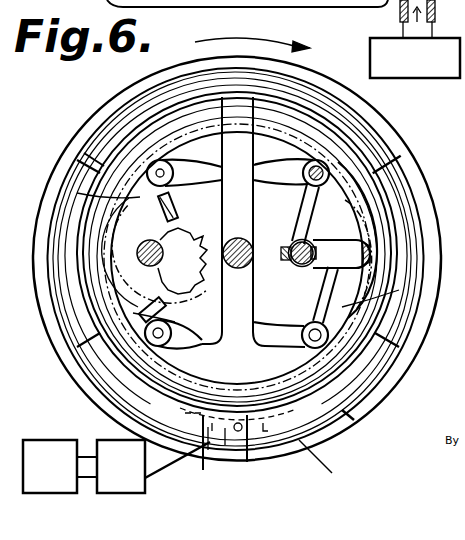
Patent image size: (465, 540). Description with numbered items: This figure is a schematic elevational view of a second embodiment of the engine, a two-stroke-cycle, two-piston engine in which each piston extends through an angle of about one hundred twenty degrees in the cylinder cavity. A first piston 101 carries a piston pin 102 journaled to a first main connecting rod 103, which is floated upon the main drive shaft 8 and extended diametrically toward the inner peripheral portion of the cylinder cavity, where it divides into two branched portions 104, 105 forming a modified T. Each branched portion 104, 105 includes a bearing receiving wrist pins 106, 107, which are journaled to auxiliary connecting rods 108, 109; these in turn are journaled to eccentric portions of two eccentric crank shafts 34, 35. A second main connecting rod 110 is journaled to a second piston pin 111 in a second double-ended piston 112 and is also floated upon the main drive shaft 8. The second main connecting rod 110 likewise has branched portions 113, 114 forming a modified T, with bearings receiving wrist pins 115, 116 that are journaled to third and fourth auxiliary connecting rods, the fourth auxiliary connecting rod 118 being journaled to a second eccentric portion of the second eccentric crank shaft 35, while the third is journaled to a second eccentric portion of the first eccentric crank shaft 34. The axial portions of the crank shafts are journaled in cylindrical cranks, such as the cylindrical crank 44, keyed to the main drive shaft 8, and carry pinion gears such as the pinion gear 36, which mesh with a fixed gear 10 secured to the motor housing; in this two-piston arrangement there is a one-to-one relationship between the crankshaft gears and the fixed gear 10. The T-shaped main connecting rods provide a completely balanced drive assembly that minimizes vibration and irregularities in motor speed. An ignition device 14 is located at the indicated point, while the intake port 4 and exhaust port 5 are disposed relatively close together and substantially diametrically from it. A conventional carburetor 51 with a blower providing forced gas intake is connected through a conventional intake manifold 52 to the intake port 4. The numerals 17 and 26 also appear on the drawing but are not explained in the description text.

The intake port 4 is at (228, 413).
The exhaust port 5 is at (309, 411).
The main drive shaft 8 is at (252, 268).
The fixed gear 10 is at (200, 234).
The ignition device 14 is at (198, 92).
The casing segment 17 is at (418, 236).
The eccentric 26 is at (155, 252).
The first eccentric crank shaft 34 is at (138, 259).
The second eccentric crank shaft 35 is at (332, 243).
The pinion gear 36 is at (355, 222).
The cylindrical crank 44 is at (317, 295).
The carburetor 51 is at (241, 265).
The intake manifold 52 is at (143, 466).
The first piston 101 is at (315, 90).
The piston pin 102 is at (243, 81).
The first main connecting rod 103 is at (298, 203).
The branched portion 104 is at (198, 336).
The branched portion 105 is at (290, 337).
The wrist pin 106 is at (165, 336).
The wrist pin 107 is at (310, 343).
The auxiliary connecting rod 108 is at (133, 313).
The auxiliary connecting rod 109 is at (263, 257).
The second main connecting rod 110 is at (244, 348).
The second piston pin 111 is at (252, 460).
The second double-ended piston 112 is at (345, 412).
The branched portion 113 is at (188, 205).
The branched portion 114 is at (289, 212).
The wrist pin 115 is at (164, 170).
The wrist pin 116 is at (305, 165).
The fourth auxiliary connecting rod 118 is at (252, 226).